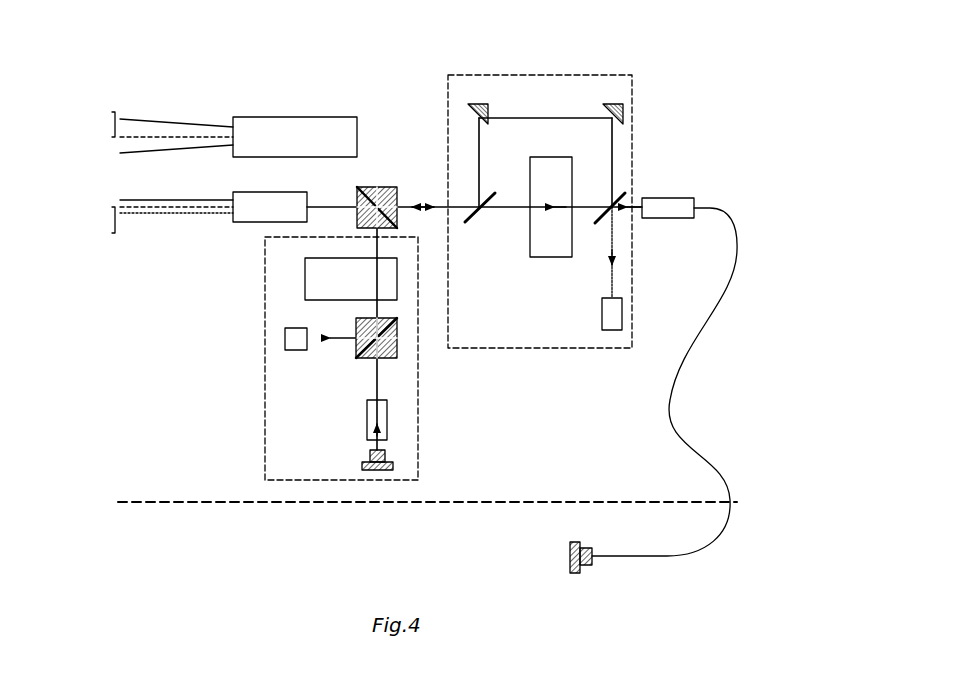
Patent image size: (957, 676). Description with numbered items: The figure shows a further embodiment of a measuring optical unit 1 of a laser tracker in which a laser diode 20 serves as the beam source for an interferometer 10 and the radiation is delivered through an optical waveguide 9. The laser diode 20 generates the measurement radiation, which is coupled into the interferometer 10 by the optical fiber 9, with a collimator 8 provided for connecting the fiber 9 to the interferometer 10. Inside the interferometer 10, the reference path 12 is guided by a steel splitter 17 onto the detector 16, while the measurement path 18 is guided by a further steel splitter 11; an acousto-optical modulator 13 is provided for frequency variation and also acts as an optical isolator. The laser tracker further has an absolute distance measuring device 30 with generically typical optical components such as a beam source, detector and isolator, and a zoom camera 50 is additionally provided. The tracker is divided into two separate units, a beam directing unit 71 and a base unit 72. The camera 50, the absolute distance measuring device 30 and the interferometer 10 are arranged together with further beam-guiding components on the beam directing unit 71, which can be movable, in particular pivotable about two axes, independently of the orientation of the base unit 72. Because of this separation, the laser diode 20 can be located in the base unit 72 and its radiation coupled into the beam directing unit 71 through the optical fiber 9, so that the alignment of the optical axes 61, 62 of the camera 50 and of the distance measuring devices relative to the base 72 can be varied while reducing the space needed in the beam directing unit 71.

The measuring optical unit 1 is at (237, 45).
The collimator 8 is at (684, 195).
The optical waveguide 9 is at (664, 382).
The interferometer 10 is at (547, 215).
The steel splitter 11 is at (448, 187).
The reference path 12 is at (647, 252).
The acousto-optical modulator 13 is at (512, 148).
The detector 16 is at (583, 344).
The steel splitter 17 is at (643, 177).
The measurement path 18 is at (445, 155).
The laser diode 20 is at (547, 555).
The absolute distance measuring device 30 is at (306, 354).
The zoom camera 50 is at (295, 119).
The optical axis 61 is at (190, 218).
The optical axis 62 is at (153, 127).
The beam directing unit 71 is at (162, 475).
The base unit 72 is at (162, 558).